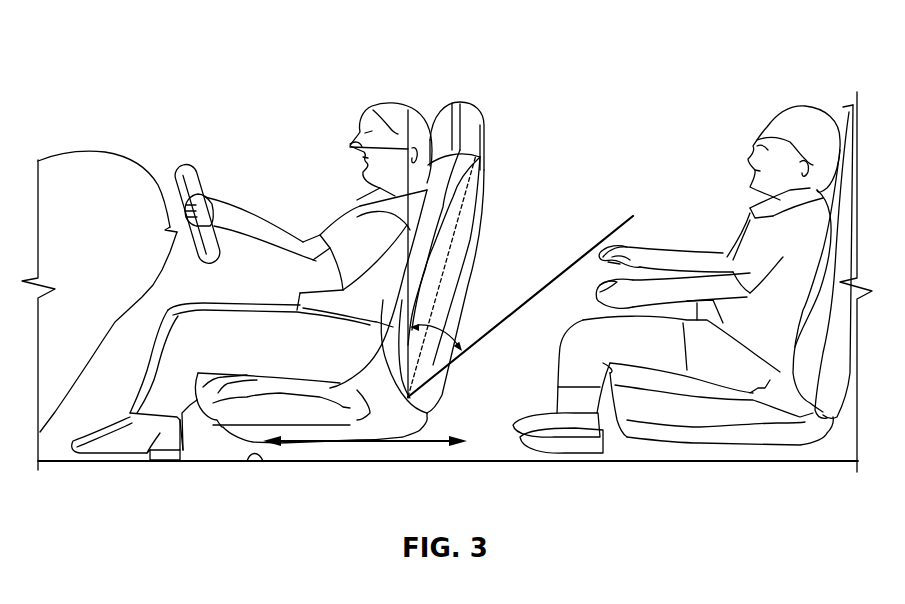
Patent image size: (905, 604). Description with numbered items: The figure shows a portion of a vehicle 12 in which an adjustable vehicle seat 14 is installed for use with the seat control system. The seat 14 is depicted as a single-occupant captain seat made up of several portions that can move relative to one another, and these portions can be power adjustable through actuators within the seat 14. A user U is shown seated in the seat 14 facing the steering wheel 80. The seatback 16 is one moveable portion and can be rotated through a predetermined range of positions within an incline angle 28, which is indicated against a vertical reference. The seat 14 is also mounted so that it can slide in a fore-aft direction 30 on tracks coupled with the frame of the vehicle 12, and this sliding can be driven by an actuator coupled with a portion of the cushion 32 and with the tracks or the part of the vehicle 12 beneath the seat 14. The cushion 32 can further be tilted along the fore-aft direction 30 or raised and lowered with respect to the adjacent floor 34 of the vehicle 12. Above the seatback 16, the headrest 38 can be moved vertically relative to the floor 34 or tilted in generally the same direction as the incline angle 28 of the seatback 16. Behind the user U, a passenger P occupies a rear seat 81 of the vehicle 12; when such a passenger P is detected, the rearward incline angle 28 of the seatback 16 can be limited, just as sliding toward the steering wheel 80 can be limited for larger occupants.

The vehicle 12 is at (124, 60).
The vehicle seat 14 is at (505, 147).
The seatback 16 is at (474, 196).
The incline angle 28 is at (460, 323).
The fore-aft direction 30 is at (428, 445).
The cushion 32 is at (257, 407).
The floor 34 is at (262, 456).
The headrest 38 is at (466, 120).
The steering wheel 80 is at (181, 165).
The rear seat 81 is at (833, 263).
The user U is at (379, 90).
The passenger P is at (745, 134).